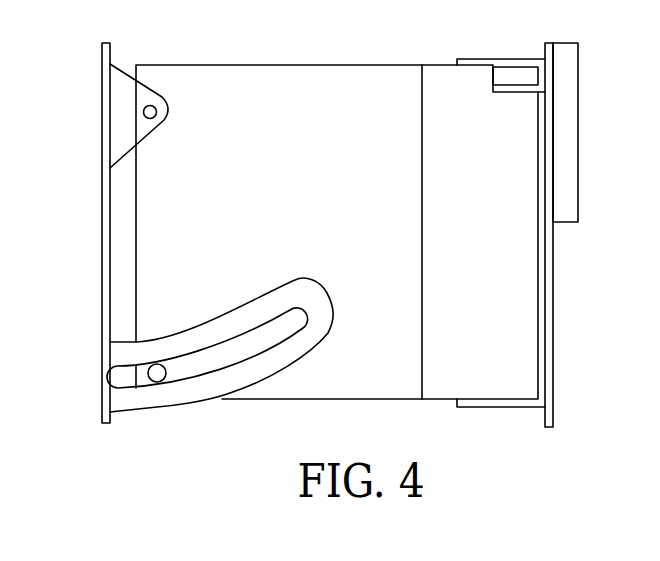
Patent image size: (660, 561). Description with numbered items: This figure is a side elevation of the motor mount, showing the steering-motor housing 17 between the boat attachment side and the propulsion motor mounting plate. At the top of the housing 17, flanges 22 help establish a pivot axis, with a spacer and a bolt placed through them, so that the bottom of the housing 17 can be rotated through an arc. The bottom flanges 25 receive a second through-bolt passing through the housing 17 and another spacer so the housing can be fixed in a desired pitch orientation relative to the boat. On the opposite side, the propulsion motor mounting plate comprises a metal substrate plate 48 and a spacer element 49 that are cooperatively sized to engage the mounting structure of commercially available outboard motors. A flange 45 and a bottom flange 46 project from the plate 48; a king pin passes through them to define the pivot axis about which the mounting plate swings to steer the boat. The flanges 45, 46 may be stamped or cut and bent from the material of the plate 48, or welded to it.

The steering-motor housing 17 is at (251, 205).
The flanges 22 is at (128, 100).
The bottom flanges 25 is at (229, 382).
The flange 45 is at (483, 62).
The bottom flange 46 is at (476, 405).
The metal substrate plate 48 is at (550, 417).
The spacer element 49 is at (565, 80).